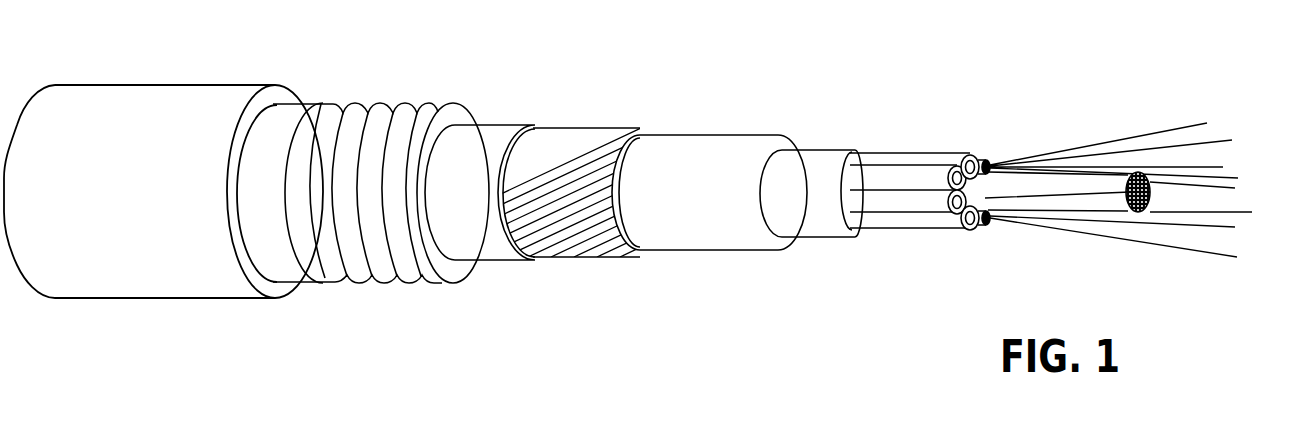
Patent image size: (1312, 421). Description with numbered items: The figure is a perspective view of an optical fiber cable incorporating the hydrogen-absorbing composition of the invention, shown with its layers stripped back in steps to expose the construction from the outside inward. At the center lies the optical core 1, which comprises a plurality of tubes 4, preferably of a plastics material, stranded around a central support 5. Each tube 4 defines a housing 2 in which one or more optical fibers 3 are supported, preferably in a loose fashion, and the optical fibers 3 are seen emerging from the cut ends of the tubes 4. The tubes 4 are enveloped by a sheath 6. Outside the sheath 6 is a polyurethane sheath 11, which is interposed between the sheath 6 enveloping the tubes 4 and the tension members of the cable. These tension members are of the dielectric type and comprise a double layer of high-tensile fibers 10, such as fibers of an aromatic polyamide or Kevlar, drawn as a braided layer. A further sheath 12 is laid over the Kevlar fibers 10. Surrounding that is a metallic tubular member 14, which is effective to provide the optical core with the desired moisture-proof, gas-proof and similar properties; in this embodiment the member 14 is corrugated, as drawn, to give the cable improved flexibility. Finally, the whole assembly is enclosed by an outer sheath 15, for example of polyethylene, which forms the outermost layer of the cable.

The optical core 1 is at (647, 210).
The housings 2 is at (988, 160).
The optical fibers 3 is at (1197, 124).
The tubes 4 is at (887, 158).
The central support 5 is at (1150, 203).
The sheath 6 is at (837, 230).
The high-tensile fibers 10 is at (587, 247).
The polyurethane sheath 11 is at (693, 145).
The further sheath 12 is at (488, 248).
The metallic tubular member 14 is at (388, 273).
The outer sheath 15 is at (292, 93).